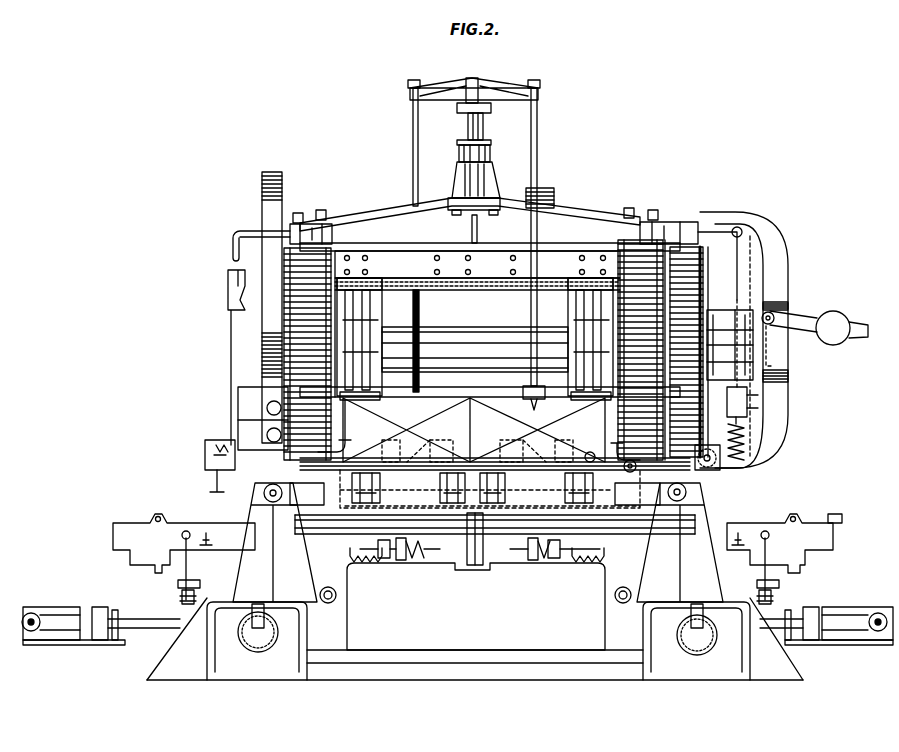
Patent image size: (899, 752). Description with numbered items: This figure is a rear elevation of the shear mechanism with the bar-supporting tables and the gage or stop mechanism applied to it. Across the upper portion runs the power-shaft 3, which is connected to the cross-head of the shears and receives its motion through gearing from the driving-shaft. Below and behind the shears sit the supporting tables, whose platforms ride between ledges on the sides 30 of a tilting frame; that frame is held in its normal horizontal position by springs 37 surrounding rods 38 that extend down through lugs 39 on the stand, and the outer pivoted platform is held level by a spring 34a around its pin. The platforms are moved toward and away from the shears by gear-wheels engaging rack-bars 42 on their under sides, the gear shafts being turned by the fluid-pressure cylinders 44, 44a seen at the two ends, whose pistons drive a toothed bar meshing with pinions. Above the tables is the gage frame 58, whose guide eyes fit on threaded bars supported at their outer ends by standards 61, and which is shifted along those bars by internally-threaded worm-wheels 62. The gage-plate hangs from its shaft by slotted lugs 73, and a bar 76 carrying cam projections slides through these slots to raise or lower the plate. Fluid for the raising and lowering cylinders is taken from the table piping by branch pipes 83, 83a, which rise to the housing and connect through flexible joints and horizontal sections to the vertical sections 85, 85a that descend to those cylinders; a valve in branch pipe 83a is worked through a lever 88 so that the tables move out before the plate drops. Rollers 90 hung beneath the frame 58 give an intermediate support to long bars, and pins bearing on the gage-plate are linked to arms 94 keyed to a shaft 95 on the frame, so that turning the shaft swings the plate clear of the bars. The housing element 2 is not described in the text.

The frame 2 is at (495, 428).
The power-shaft 3 is at (453, 337).
The sides of frame 30 is at (473, 543).
The spring 34a is at (545, 560).
The springs 37 is at (182, 596).
The rods 38 is at (186, 565).
The lugs 39 is at (178, 584).
The rack-bars 42 is at (358, 565).
The fluid-pressure cylinder 44 is at (65, 616).
The fluid-pressure cylinder 44a is at (838, 618).
The frame 58 is at (490, 495).
The standards 61 is at (478, 542).
The worm-wheels 62 is at (668, 494).
The lugs or ears 73 is at (440, 454).
The bar 76 is at (372, 462).
The branch pipe 83 is at (233, 253).
The branch pipe 83a is at (742, 294).
The vertical section 85 is at (340, 325).
The vertical section 85a is at (616, 326).
The lever 88 is at (840, 523).
The rollers 90 is at (494, 540).
The arms 94 is at (440, 490).
The shaft 95 is at (425, 465).